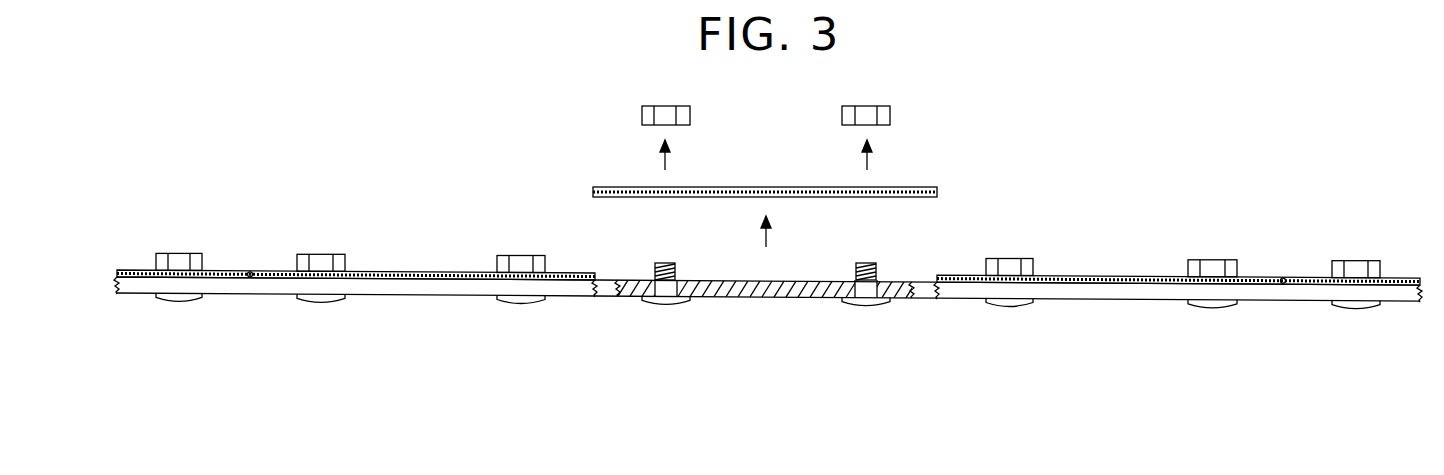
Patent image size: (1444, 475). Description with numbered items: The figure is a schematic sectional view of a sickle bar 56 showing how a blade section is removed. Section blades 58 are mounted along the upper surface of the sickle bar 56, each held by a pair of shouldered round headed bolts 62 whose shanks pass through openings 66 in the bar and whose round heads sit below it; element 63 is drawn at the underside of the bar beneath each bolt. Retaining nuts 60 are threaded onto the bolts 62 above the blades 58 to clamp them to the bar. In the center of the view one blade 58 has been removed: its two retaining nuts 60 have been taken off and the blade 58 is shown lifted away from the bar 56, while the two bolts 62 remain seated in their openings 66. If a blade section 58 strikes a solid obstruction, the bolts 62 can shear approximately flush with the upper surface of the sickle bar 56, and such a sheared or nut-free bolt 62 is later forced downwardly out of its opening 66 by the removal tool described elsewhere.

The sickle bar 56 is at (798, 290).
The section blade 58 is at (913, 190).
The retaining nut 60 is at (863, 117).
The shouldered round headed bolt 62 is at (868, 268).
The washer 63 is at (870, 305).
The opening 66 is at (652, 288).